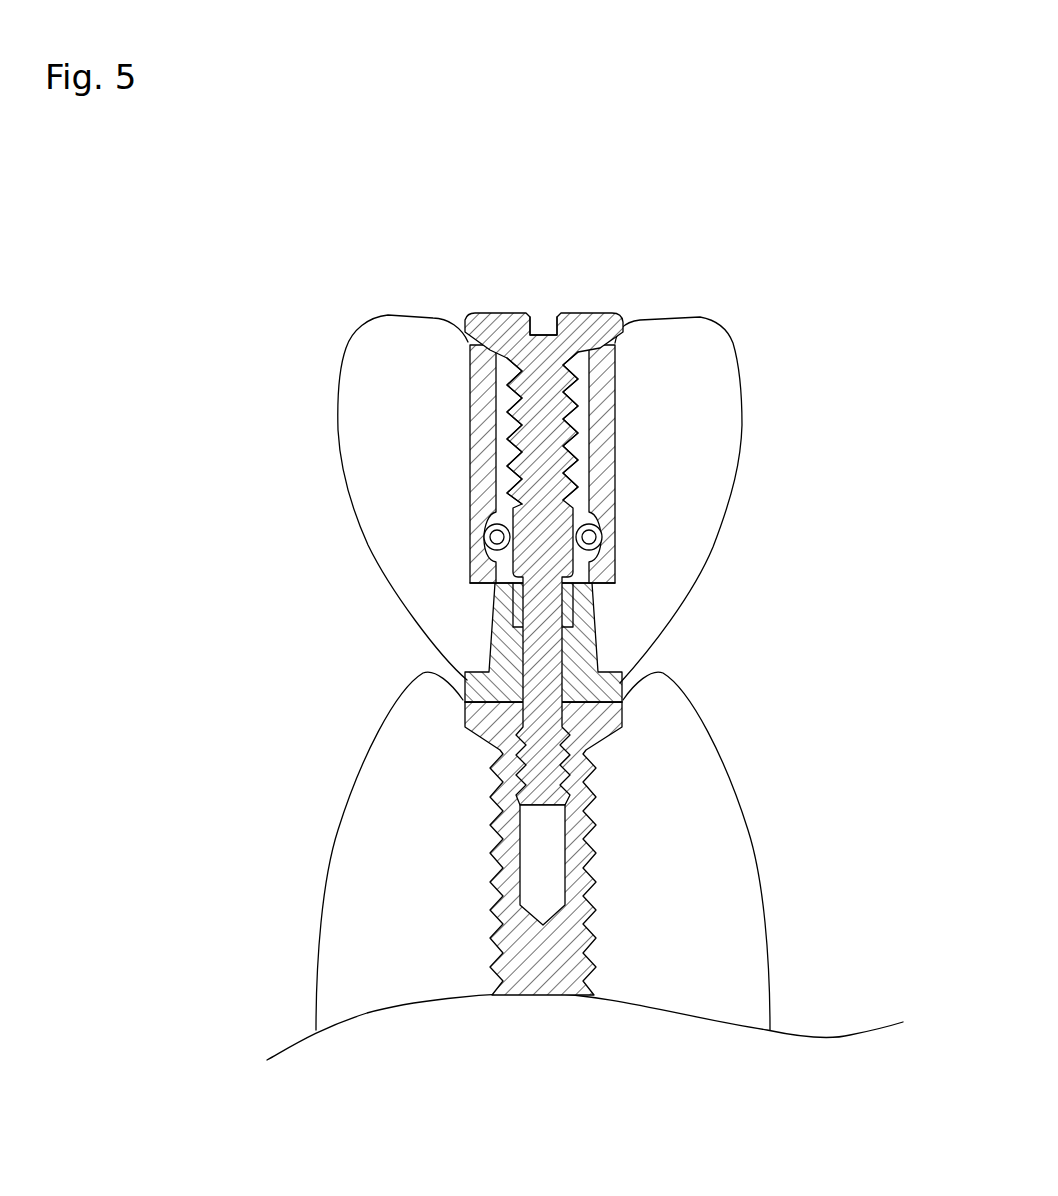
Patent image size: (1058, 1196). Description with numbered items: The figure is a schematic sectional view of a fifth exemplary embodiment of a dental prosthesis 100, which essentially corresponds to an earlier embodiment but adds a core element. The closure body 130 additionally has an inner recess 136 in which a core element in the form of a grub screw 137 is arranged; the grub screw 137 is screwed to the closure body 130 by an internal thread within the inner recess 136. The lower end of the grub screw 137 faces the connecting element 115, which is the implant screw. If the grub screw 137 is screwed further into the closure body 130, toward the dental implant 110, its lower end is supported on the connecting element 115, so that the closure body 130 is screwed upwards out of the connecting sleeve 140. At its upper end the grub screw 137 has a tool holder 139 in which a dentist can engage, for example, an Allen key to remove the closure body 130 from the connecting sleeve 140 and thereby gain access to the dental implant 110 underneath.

The dental prosthesis 100 is at (745, 270).
The dental implant 110 is at (640, 742).
The connecting element 115 is at (558, 605).
The closure body 130 is at (468, 312).
The inner recess 136 is at (570, 400).
The grub screw 137 is at (578, 548).
The tool holder 139 is at (536, 322).
The connecting sleeve 140 is at (478, 436).